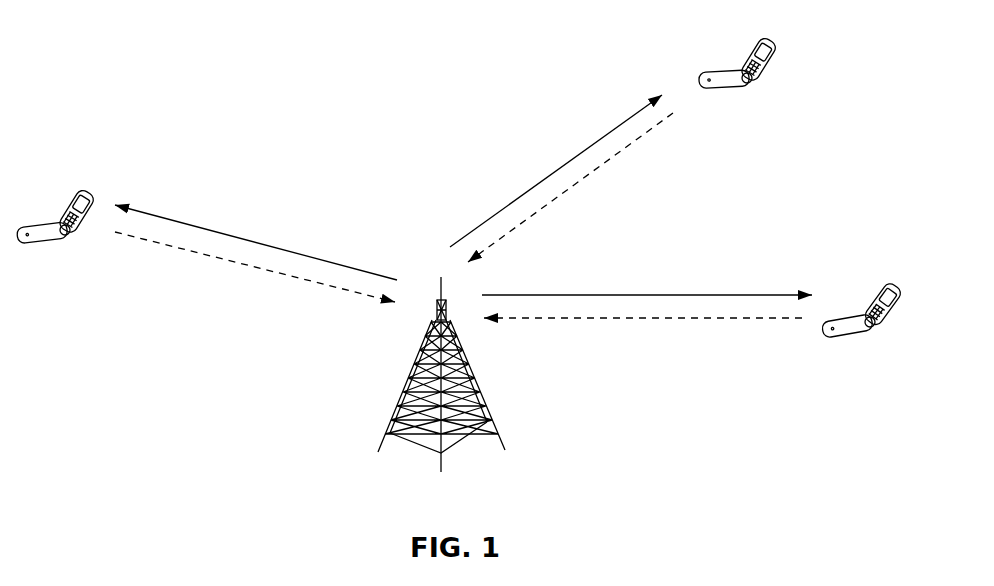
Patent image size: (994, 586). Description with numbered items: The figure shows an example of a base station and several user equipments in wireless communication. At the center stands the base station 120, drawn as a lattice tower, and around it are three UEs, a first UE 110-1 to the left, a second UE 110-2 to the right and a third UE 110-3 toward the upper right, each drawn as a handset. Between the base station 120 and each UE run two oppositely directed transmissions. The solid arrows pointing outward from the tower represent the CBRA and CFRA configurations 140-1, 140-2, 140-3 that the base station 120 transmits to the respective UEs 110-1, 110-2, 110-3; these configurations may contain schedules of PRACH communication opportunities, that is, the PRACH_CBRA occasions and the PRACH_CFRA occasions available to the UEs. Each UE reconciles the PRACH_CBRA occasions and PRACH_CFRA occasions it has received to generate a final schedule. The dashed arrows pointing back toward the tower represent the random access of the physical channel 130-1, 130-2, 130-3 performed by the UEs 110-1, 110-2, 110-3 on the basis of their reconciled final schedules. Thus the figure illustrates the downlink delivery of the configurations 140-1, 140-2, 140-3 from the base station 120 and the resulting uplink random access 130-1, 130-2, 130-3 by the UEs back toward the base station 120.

The user equipment 110-1 is at (63, 243).
The user equipment 110-2 is at (865, 335).
The user equipment 110-3 is at (745, 90).
The base station 120 is at (485, 422).
The random access of the physical channel 130-1 is at (287, 277).
The random access of the physical channel 130-2 is at (613, 320).
The random access of the physical channel 130-3 is at (590, 170).
The CBRA and CFRA configuration 140-1 is at (207, 228).
The CBRA and CFRA configuration 140-2 is at (737, 293).
The CBRA and CFRA configuration 140-3 is at (597, 142).